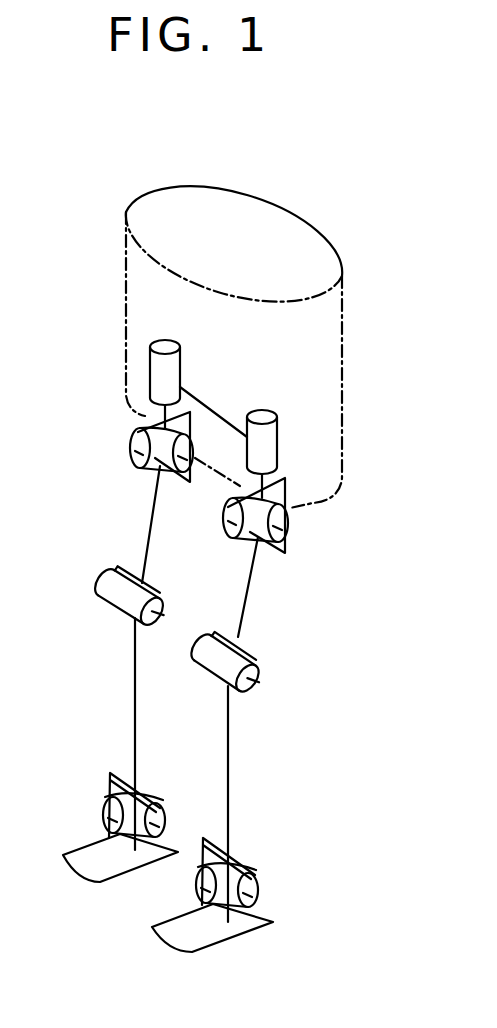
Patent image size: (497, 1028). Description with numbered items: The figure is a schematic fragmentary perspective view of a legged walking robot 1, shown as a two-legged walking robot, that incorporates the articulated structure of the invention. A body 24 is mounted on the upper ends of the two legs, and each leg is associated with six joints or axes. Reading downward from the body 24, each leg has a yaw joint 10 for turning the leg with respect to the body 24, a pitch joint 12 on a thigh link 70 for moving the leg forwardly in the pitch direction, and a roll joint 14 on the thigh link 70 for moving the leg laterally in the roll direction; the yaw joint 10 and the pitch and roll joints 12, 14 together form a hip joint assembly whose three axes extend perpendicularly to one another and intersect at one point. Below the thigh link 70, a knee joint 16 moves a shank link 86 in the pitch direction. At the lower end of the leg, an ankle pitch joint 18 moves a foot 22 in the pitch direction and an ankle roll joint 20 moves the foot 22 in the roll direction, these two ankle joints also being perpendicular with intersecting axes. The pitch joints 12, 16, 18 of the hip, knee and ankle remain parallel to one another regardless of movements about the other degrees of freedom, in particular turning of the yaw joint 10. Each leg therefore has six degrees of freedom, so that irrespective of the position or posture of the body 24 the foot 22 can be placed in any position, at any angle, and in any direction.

The legged walking robot 1 is at (326, 230).
The body 24 is at (127, 231).
The yaw joint 10 is at (143, 397).
The roll joint 14 is at (131, 450).
The pitch joint 12 is at (187, 483).
The thigh link 70 is at (149, 531).
The knee joint 16 is at (153, 593).
The shank link 86 is at (135, 654).
The ankle pitch joint 18 is at (110, 775).
The ankle roll joint 20 is at (106, 832).
The foot 22 is at (78, 863).